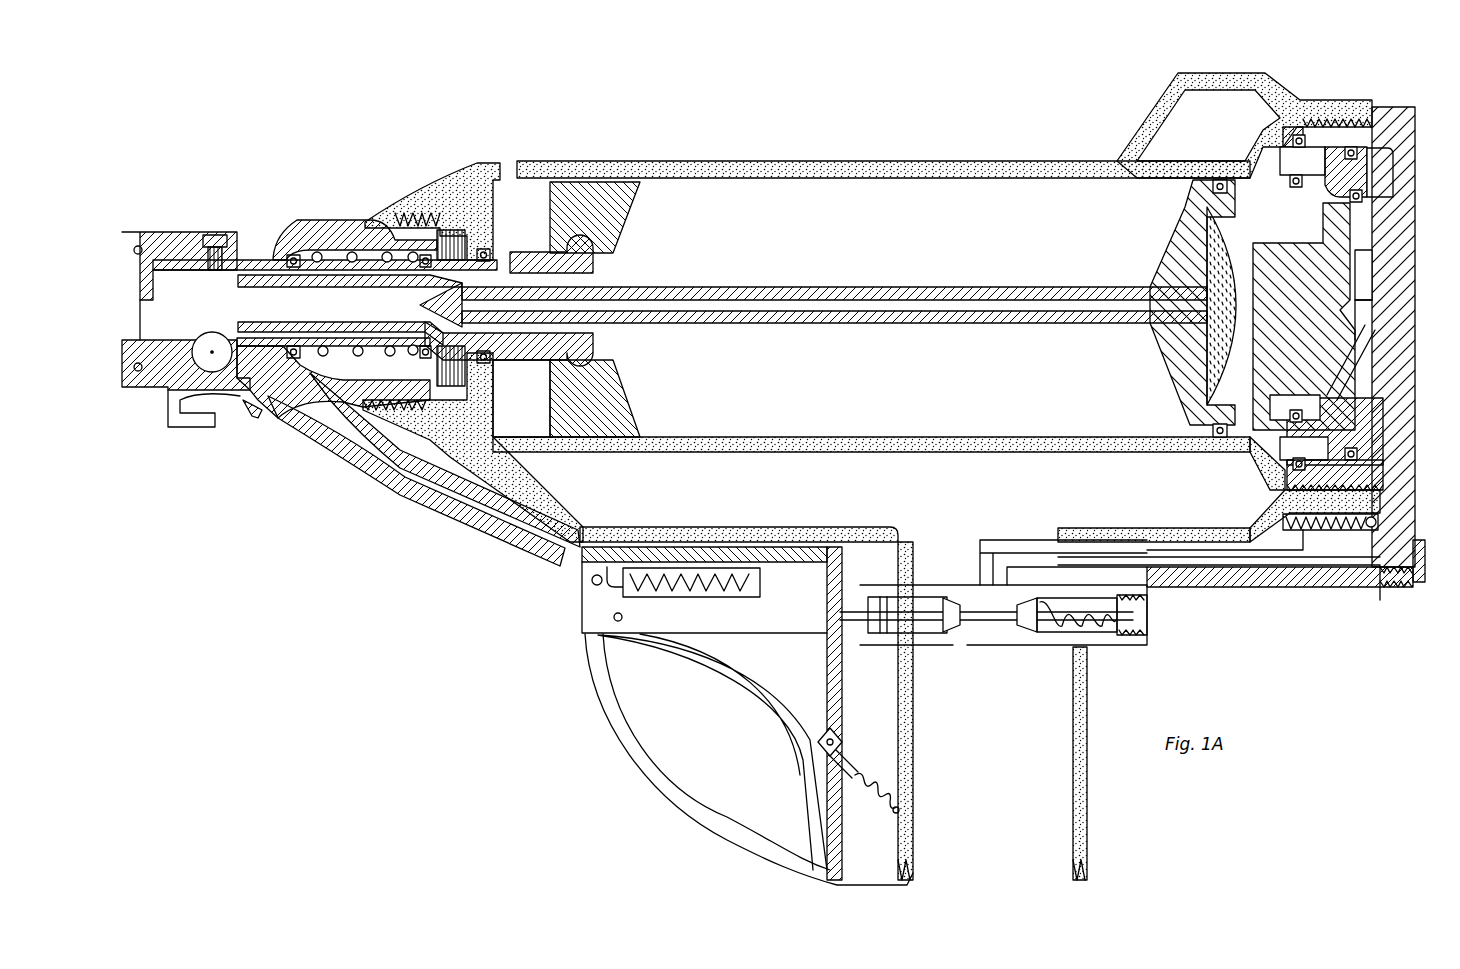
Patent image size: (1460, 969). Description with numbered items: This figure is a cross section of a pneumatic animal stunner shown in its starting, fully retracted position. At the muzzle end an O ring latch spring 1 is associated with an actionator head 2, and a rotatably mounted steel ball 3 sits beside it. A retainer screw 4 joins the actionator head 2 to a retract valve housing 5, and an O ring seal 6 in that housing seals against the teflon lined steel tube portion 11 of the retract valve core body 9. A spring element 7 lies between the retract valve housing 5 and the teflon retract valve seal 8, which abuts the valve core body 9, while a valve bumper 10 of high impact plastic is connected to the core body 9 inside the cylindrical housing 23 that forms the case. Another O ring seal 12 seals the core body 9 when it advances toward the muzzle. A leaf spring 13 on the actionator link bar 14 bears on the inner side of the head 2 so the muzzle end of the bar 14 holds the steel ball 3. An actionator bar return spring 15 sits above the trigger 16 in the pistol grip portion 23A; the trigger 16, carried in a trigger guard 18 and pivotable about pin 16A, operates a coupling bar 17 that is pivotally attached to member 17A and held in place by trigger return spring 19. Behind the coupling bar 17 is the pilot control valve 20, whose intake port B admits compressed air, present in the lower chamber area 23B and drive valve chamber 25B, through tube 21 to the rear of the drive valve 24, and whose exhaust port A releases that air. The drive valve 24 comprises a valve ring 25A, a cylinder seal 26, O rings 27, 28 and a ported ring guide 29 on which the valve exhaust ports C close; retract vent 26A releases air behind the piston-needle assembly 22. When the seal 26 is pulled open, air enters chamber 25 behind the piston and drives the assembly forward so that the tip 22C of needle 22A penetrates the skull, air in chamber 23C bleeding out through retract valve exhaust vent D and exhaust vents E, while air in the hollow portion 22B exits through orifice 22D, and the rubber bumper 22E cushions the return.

The O ring latch spring 1 is at (158, 262).
The actionator head 2 is at (165, 388).
The steel ball 3 is at (212, 332).
The retainer screw 4 is at (214, 233).
The retract valve housing 5 is at (318, 222).
The O ring seal 6 is at (288, 252).
The spring element 7 is at (345, 395).
The retract valve seal 8 is at (437, 410).
The retract valve core body 9 is at (532, 368).
The valve bumper 10 is at (590, 452).
The teflon lined steel tube portion 11 is at (350, 288).
The O ring seal 12 is at (470, 230).
The leaf spring 13 is at (222, 415).
The actionator link bar 14 is at (575, 560).
The actionator bar return spring 15 is at (700, 585).
The trigger 16 is at (740, 670).
The pin 16A is at (622, 617).
The coupling bar 17 is at (825, 622).
The member 17A is at (842, 731).
The trigger guard 18 is at (672, 828).
The trigger return spring 19 is at (875, 797).
The pilot control valve 20 is at (1000, 623).
The tube 21 is at (1183, 565).
The piston-needle assembly 22 is at (1160, 235).
The needle portion 22A is at (740, 286).
The hollow portion 22B is at (886, 305).
The tip 22C is at (420, 300).
The orifice 22D is at (600, 278).
The rubber bumper 22E is at (1205, 358).
The cylindrical housing 23 is at (800, 160).
The pistol grip portion 23A is at (859, 703).
The lower chamber area 23B is at (885, 487).
The chamber 23C is at (877, 377).
The drive valve 24 is at (1392, 105).
The chamber 25 is at (1247, 197).
The valve ring 25A is at (1338, 150).
The drive valve chamber 25B is at (1385, 179).
The cylinder seal 26 is at (1308, 150).
The retract vent 26A is at (1385, 283).
The O ring 27 is at (1280, 475).
The O ring 28 is at (1355, 455).
The ported ring guide 29 is at (1350, 345).
The exhaust port A is at (1140, 581).
The intake port B is at (960, 645).
The valve exhaust ports C is at (1255, 455).
The retract valve exhaust vent D is at (505, 250).
The exhaust vents E is at (509, 158).